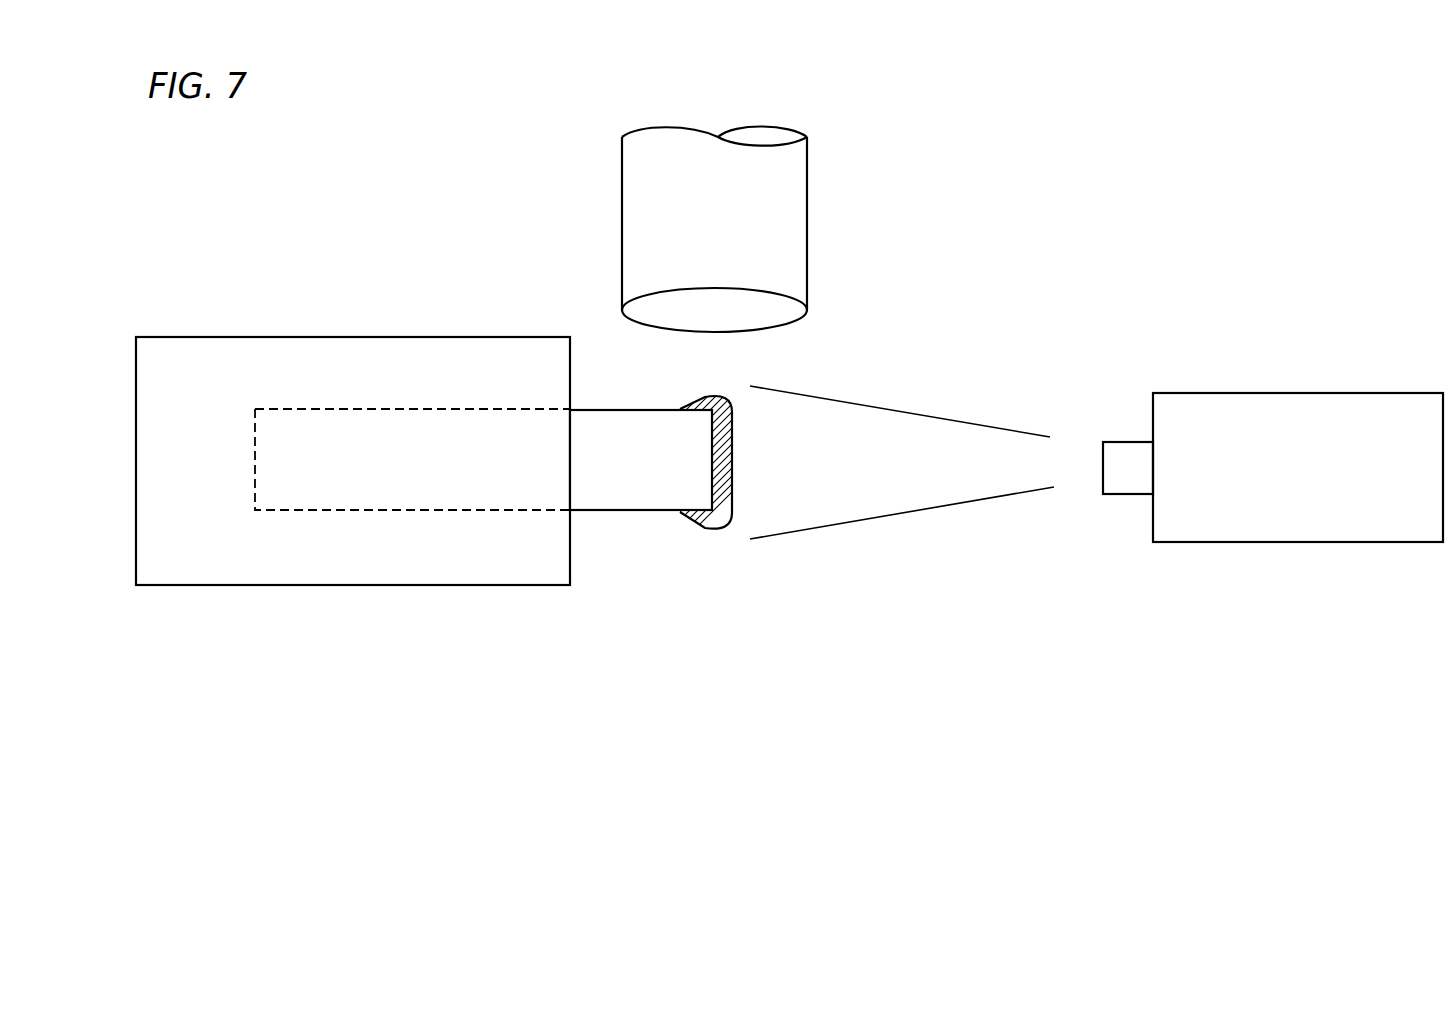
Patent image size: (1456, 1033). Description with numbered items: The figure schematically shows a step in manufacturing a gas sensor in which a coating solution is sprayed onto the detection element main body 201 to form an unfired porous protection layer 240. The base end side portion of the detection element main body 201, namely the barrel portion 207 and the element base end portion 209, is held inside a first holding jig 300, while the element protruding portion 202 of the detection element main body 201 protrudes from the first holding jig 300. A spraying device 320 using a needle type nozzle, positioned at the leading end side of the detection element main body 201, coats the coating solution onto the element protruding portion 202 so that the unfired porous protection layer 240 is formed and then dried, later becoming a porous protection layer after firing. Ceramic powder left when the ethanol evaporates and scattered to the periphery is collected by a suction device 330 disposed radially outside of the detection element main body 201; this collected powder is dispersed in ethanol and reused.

The first holding jig 300 is at (350, 348).
The element base end portion 209 is at (318, 425).
The barrel portion 207 is at (477, 425).
The detection element main body 201 is at (596, 485).
The element protruding portion 202 is at (658, 483).
The unfired porous protection layer 240 is at (731, 470).
The suction device 330 is at (793, 222).
The spraying device 320 is at (1258, 405).